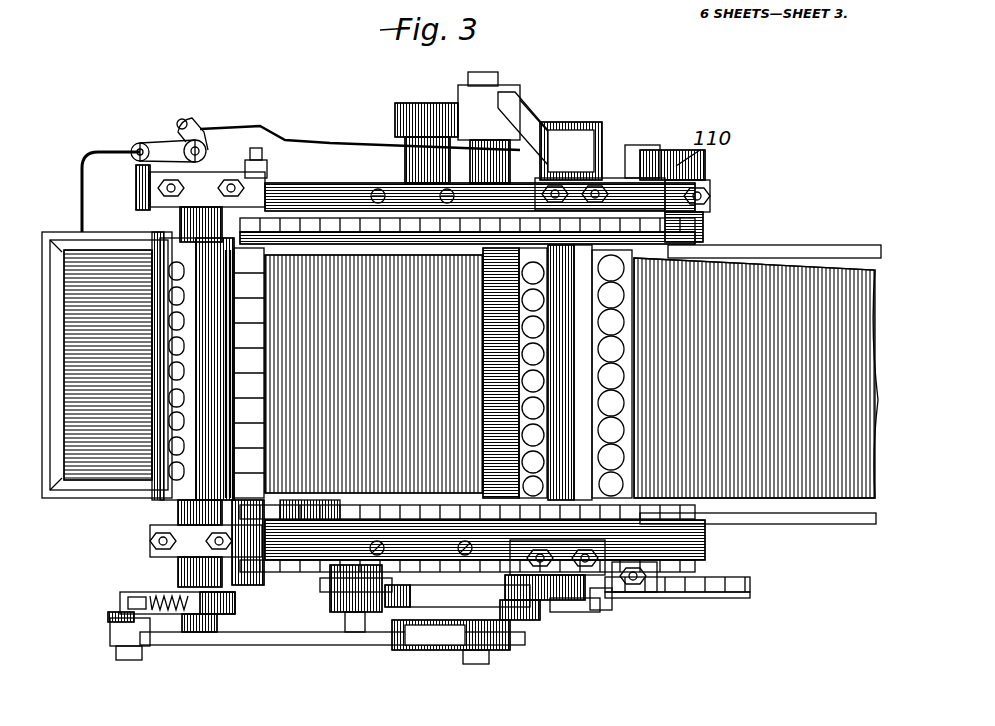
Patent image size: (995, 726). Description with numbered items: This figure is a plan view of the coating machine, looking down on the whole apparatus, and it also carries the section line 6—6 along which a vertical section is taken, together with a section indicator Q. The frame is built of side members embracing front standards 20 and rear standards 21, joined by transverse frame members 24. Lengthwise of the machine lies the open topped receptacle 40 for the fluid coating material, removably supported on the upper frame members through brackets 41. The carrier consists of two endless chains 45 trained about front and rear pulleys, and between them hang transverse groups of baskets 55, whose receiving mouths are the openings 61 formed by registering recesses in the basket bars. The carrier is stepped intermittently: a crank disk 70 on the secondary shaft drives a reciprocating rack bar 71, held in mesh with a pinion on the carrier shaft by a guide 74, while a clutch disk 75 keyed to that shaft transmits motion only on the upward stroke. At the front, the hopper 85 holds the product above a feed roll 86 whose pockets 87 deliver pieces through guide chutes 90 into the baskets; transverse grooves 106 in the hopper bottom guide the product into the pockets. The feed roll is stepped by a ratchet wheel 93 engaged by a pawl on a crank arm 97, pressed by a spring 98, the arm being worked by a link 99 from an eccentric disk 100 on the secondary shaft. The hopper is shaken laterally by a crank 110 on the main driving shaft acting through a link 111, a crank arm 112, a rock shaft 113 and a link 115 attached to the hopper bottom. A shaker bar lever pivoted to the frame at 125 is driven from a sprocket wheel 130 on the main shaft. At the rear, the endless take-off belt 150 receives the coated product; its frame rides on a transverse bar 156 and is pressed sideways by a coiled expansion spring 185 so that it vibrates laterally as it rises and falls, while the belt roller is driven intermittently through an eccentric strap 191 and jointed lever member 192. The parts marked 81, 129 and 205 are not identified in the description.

The section line 6— 6 is at (162, 357).
The section indicator Q is at (82, 150).
The front standards 20 is at (208, 178).
The rear standards 21 is at (580, 188).
The transverse frame members 24 is at (260, 178).
The open topped receptacle 40 is at (340, 255).
The brackets 41 is at (325, 185).
The endless chains 45 is at (388, 215).
The group of baskets 55 is at (500, 402).
The openings 61 is at (614, 410).
The crank disk 70 is at (418, 118).
The reciprocating rack bar 71 is at (527, 125).
The guide 74 is at (582, 125).
The disk 75 is at (632, 150).
The bracket 81 is at (628, 592).
The hopper 85 is at (72, 236).
The feed roll 86 is at (185, 258).
The pockets 87 is at (180, 365).
The guide chutes 90 is at (246, 300).
The ratchet wheel 93 is at (186, 634).
The crank arm 97 is at (158, 600).
The spring 98 is at (118, 628).
The link 99 is at (254, 646).
The disk 100 is at (398, 650).
The transverse grooves 106 is at (84, 440).
The crank 110 is at (157, 146).
The link 111 is at (300, 130).
The crank arm 112 is at (190, 142).
The rock shaft 113 is at (200, 128).
The link 115 is at (84, 184).
The pivot 125 is at (332, 612).
The collar 129 is at (352, 632).
The sprocket wheel 130 is at (690, 590).
The endless take-off belt 150 is at (800, 524).
The transverse bar 156 is at (705, 232).
The coiled expansion spring 185 is at (566, 612).
The strap 191 is at (430, 650).
The member 192 is at (522, 620).
The post 205 is at (460, 130).